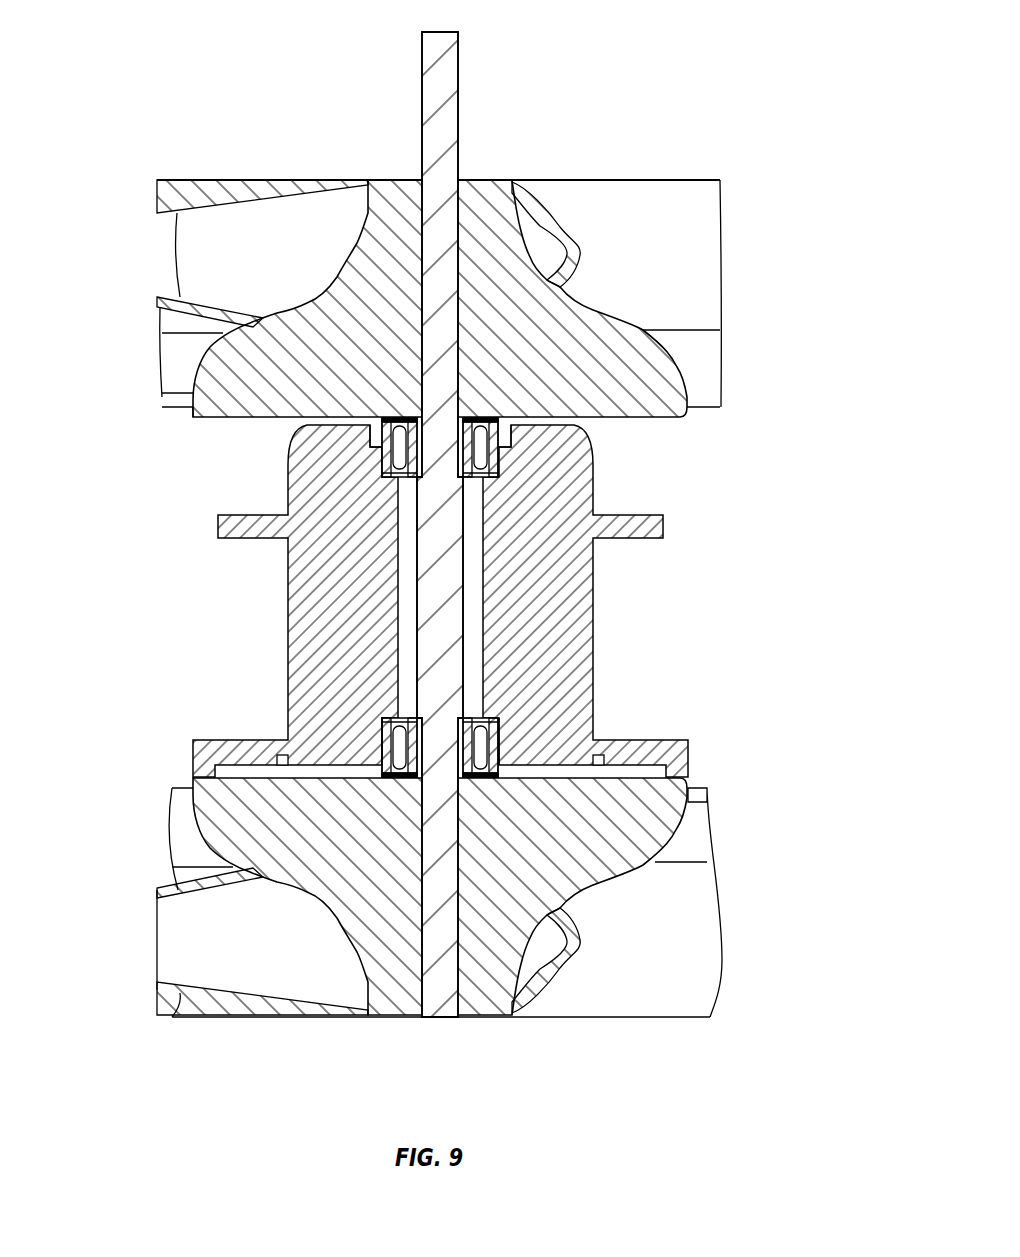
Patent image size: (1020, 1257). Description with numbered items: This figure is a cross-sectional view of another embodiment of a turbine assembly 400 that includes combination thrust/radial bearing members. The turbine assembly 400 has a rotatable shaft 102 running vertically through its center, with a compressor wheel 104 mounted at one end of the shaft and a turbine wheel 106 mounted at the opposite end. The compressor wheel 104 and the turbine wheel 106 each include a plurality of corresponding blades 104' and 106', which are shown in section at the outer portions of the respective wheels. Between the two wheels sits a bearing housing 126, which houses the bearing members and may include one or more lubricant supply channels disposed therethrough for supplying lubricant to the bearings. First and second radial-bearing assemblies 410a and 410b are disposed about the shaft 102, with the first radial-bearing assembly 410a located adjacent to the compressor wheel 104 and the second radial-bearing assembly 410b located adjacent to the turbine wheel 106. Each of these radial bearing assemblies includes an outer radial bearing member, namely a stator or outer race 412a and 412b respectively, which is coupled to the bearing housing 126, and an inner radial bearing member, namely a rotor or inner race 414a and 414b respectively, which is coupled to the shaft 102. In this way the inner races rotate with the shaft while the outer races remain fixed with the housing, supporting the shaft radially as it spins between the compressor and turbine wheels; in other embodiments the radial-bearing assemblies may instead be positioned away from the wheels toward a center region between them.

The rotatable shaft 102 is at (447, 77).
The turbine assembly 400 is at (689, 70).
The compressor wheel 104 is at (422, 268).
The blades 104' is at (496, 298).
The turbine wheel 106 is at (515, 896).
The blades 106' is at (497, 902).
The bearing housing 126 is at (560, 590).
The first radial-bearing assembly 410a is at (366, 463).
The outer race 412a is at (380, 450).
The inner race 414a is at (407, 413).
The second radial-bearing assembly 410b is at (364, 743).
The outer race 412b is at (384, 717).
The inner race 414b is at (400, 777).